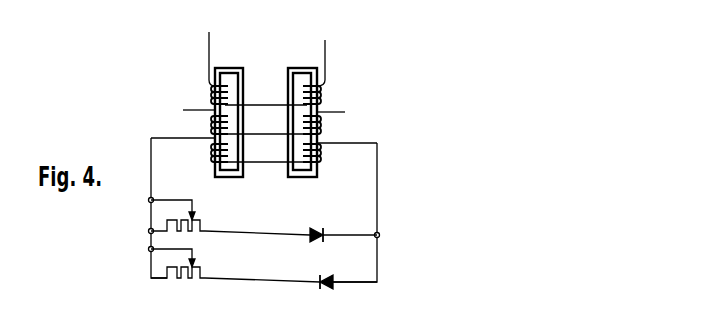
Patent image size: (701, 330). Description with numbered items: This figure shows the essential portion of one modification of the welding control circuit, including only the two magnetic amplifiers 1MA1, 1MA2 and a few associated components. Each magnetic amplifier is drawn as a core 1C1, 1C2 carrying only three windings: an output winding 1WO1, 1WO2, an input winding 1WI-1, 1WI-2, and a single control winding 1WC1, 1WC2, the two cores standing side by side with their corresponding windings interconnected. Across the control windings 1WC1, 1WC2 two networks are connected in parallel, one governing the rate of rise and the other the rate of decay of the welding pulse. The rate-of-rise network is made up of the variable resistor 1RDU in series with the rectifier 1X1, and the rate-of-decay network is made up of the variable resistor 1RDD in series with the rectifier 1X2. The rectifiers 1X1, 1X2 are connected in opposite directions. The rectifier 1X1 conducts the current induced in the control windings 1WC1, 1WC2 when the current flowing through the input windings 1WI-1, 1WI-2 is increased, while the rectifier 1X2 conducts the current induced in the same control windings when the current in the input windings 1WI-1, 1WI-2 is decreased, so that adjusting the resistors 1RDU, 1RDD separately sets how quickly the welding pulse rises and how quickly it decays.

The core of first magnetic amplifier 1C1 is at (227, 68).
The core of second magnetic amplifier 1C2 is at (299, 68).
The output winding 1WO1 is at (211, 89).
The output winding 1WO2 is at (322, 93).
The input winding 1WI-1 is at (211, 119).
The input winding 1WI-2 is at (322, 124).
The control winding 1WC1 is at (211, 148).
The control winding 1WC2 is at (322, 153).
The magnetic amplifier 1MA1 is at (244, 200).
The magnetic amplifier 1MA2 is at (323, 200).
The variable resistor 1RDD is at (205, 231).
The variable resistor 1RDU is at (205, 278).
The rectifier 1X1 is at (325, 279).
The rectifier 1X2 is at (324, 236).